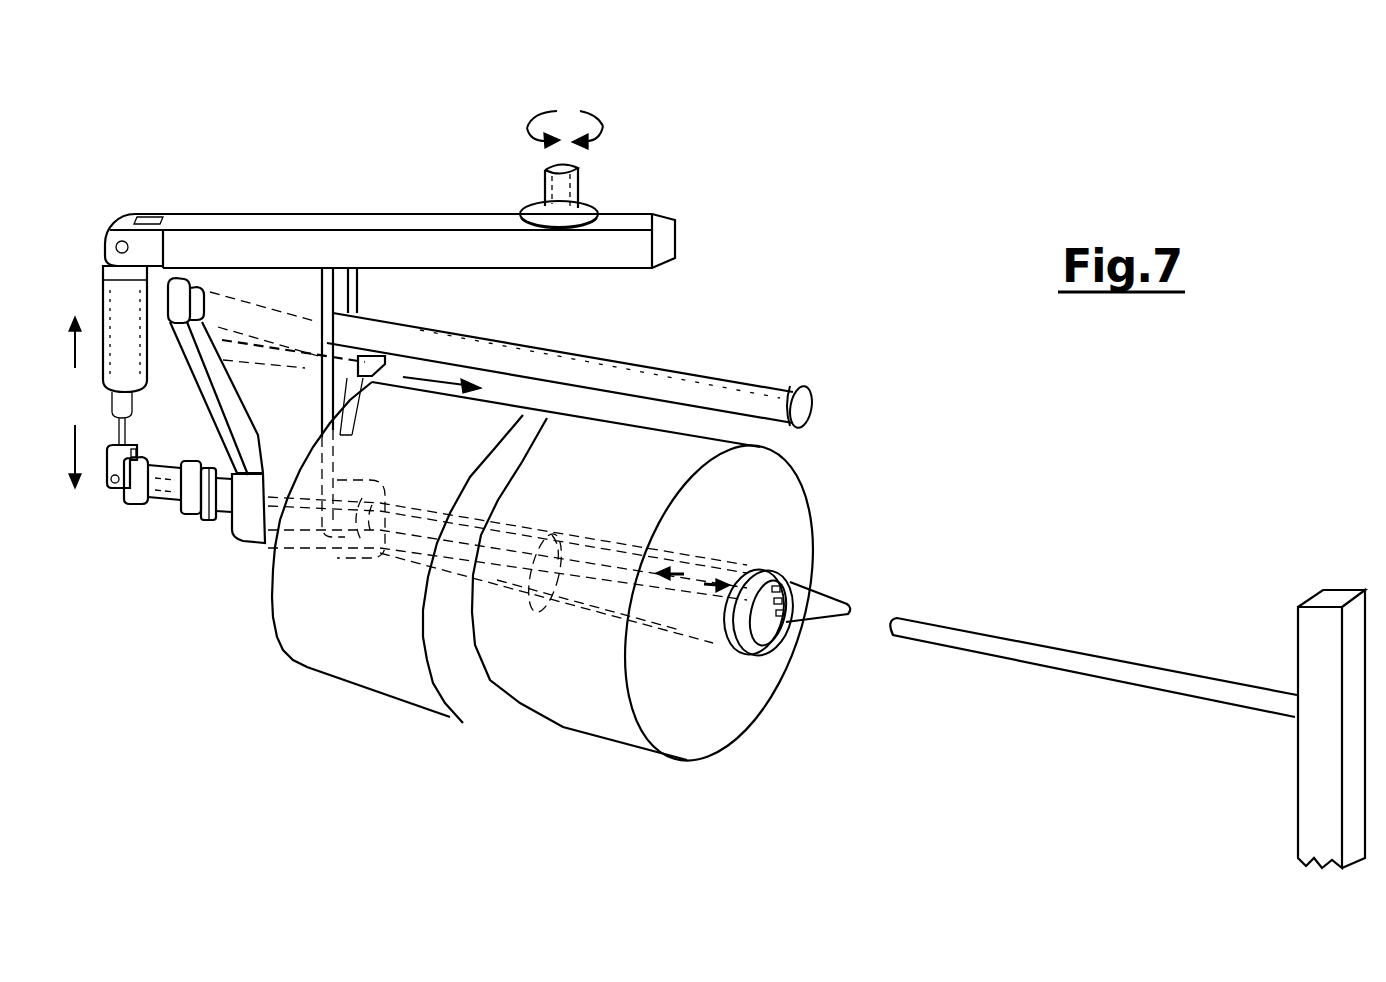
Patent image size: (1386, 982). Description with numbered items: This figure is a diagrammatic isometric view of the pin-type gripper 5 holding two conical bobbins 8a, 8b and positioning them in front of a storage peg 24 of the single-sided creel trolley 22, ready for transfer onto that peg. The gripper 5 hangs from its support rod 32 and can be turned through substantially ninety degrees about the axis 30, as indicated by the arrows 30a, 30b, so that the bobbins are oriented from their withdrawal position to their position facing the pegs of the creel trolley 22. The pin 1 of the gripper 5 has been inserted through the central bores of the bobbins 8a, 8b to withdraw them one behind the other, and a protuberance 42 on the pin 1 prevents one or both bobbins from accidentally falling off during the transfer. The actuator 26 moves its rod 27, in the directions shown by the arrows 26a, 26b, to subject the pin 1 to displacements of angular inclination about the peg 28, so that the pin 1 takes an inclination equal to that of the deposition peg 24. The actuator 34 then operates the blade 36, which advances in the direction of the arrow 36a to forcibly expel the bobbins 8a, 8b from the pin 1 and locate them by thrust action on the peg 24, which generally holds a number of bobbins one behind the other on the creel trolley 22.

The pin-type gripper 5 is at (120, 182).
The support rod 32 is at (428, 237).
The axis 30 is at (567, 190).
The arrow 30a is at (602, 122).
The arrow 30b is at (553, 112).
The actuator 26 is at (118, 290).
The arrow 26a is at (75, 362).
The arrow 26b is at (75, 438).
The rod 27 is at (108, 435).
The peg 28 is at (263, 548).
The blade 36 is at (380, 357).
The arrow 36a is at (443, 380).
The actuator 34 is at (717, 392).
The bobbin 8a is at (330, 660).
The bobbin 8b is at (590, 693).
The protuberance 42 is at (787, 580).
The pin 1 is at (838, 610).
The peg 24 is at (1127, 668).
The creel trolley 22 is at (1313, 655).